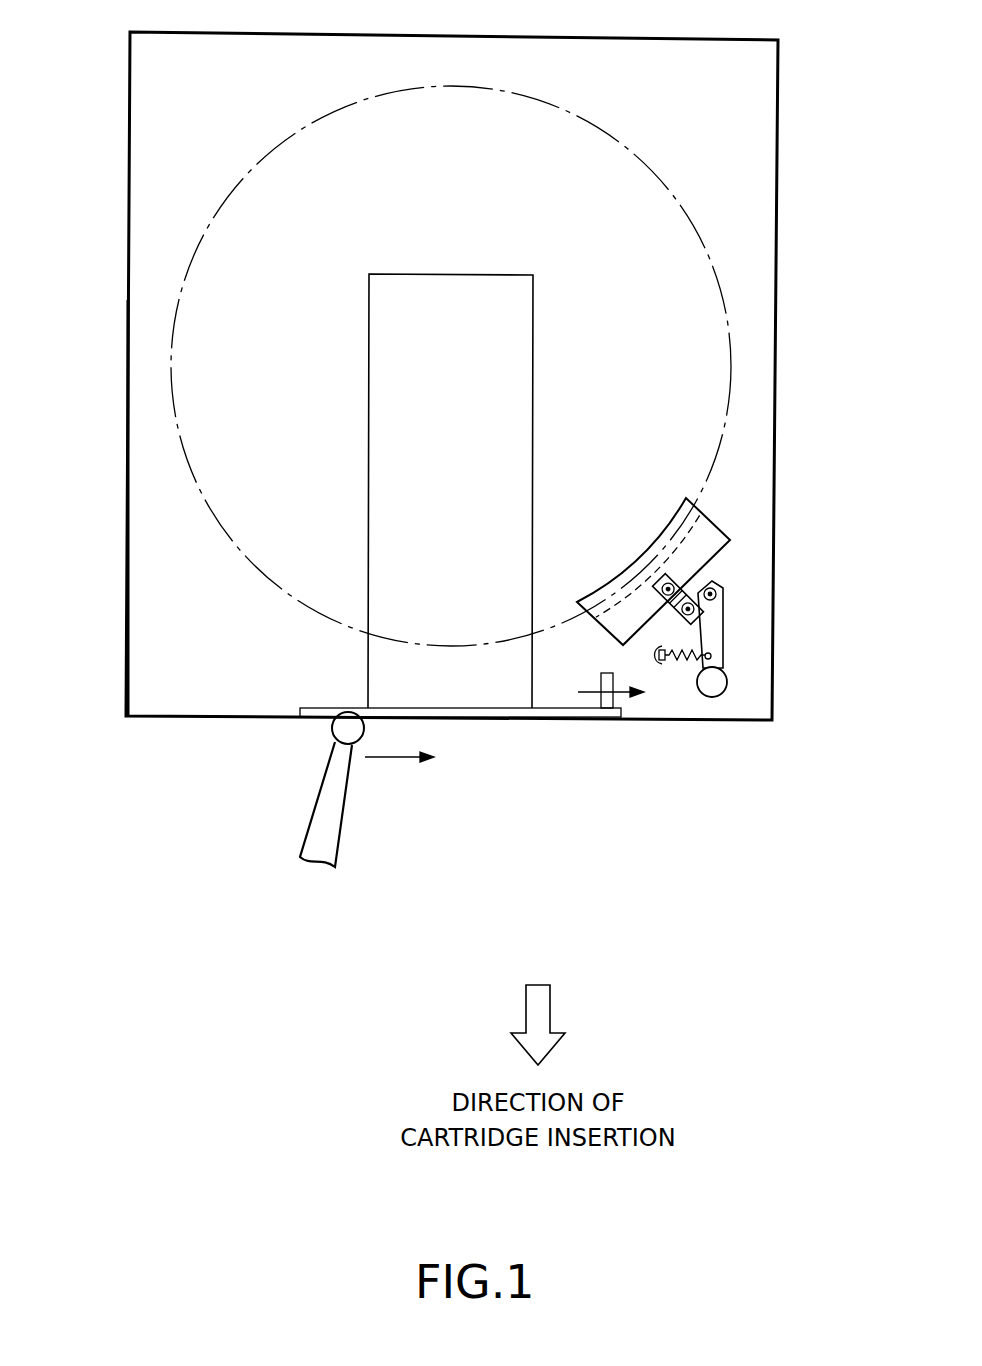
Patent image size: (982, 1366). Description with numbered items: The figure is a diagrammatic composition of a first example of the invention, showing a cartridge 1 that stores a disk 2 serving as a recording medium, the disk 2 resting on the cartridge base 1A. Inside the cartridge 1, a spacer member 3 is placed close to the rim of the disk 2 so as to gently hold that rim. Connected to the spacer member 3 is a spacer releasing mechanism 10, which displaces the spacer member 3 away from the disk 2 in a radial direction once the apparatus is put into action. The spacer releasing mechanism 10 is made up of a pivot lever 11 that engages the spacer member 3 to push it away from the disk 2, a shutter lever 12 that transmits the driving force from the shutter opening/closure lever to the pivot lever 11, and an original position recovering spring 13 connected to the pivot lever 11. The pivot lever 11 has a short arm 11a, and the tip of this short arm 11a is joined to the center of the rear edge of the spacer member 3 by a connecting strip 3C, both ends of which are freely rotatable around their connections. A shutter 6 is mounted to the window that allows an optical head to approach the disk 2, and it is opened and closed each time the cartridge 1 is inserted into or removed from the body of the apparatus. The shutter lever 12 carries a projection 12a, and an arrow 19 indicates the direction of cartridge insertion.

The cartridge 1 is at (778, 104).
The cartridge base 1A is at (160, 612).
The disk 2 is at (562, 110).
The spacer member 3 is at (707, 532).
The connecting strip 3C is at (651, 595).
The shutter 6 is at (363, 588).
The spacer releasing mechanism 10 is at (590, 705).
The pivot lever 11 is at (724, 645).
The short arm 11a is at (720, 593).
The shutter lever 12 is at (605, 718).
The projection 12a is at (601, 678).
The original position recovering spring 13 is at (685, 663).
The direction of cartridge insertion 19 is at (553, 1000).